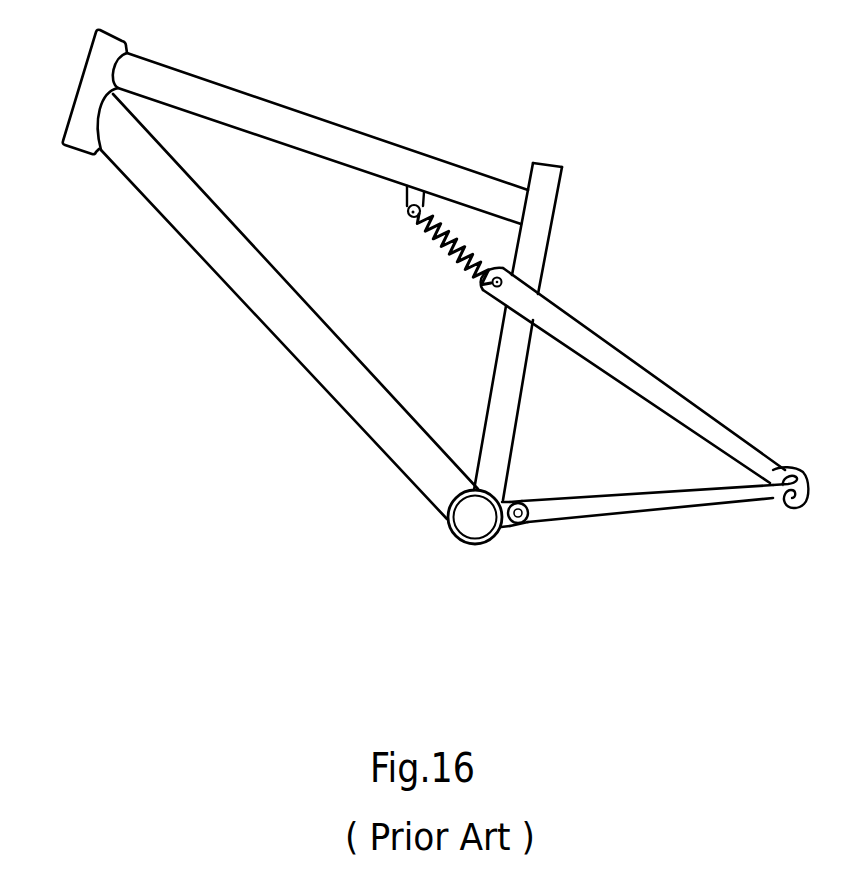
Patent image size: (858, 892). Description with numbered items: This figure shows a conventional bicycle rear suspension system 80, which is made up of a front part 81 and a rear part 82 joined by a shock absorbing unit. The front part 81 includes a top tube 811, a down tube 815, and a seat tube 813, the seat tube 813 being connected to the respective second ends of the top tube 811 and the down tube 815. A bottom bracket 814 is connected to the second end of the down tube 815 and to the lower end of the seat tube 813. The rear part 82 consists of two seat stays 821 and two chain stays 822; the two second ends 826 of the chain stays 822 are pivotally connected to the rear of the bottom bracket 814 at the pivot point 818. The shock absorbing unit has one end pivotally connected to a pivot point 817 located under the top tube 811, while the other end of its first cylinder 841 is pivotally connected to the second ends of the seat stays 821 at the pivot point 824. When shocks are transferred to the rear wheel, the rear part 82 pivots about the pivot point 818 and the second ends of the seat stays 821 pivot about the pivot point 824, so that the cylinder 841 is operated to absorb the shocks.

The suspension system 80 is at (743, 188).
The front part 81 is at (155, 345).
The top tube 811 is at (297, 127).
The seat tube 813 is at (540, 203).
The bottom bracket 814 is at (462, 545).
The down tube 815 is at (313, 353).
The pivot point 817 is at (405, 210).
The pivot point 818 is at (520, 530).
The rear part 82 is at (718, 525).
The seat stays 821 is at (660, 392).
The chain stays 822 is at (637, 527).
The pivot point 824 is at (510, 275).
The second ends of the chain stays 826 is at (527, 492).
The first cylinder 841 is at (462, 280).